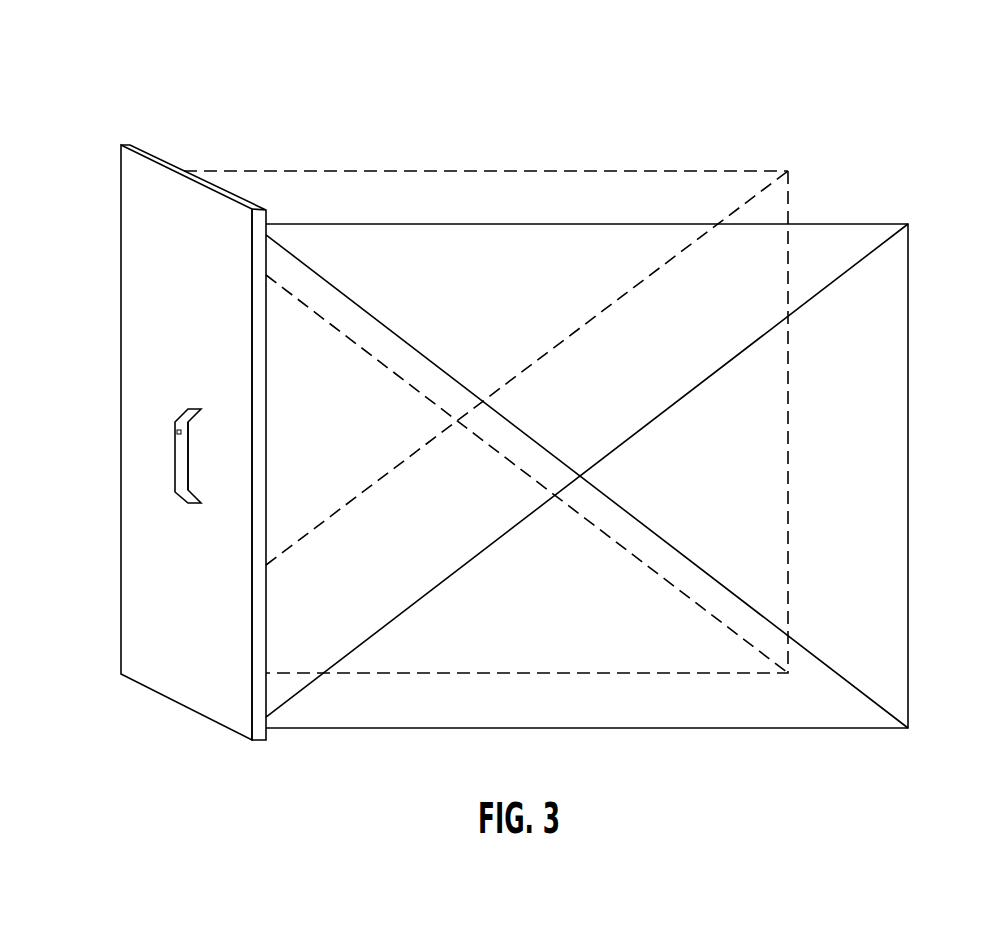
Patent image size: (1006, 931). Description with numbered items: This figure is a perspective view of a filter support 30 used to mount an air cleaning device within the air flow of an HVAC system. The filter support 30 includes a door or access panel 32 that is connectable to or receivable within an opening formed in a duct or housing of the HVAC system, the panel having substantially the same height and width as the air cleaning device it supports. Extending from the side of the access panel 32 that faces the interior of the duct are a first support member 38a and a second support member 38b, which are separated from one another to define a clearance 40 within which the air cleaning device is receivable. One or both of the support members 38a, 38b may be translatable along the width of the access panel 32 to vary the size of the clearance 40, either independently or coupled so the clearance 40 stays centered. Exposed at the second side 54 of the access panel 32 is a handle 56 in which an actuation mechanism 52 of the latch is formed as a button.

The filter support 30 is at (92, 143).
The access panel 32 is at (160, 155).
The first support member 38a is at (505, 190).
The second support member 38b is at (892, 438).
The clearance 40 is at (807, 217).
The actuation mechanism 52 is at (178, 432).
The second side 54 is at (143, 333).
The handle 56 is at (185, 470).